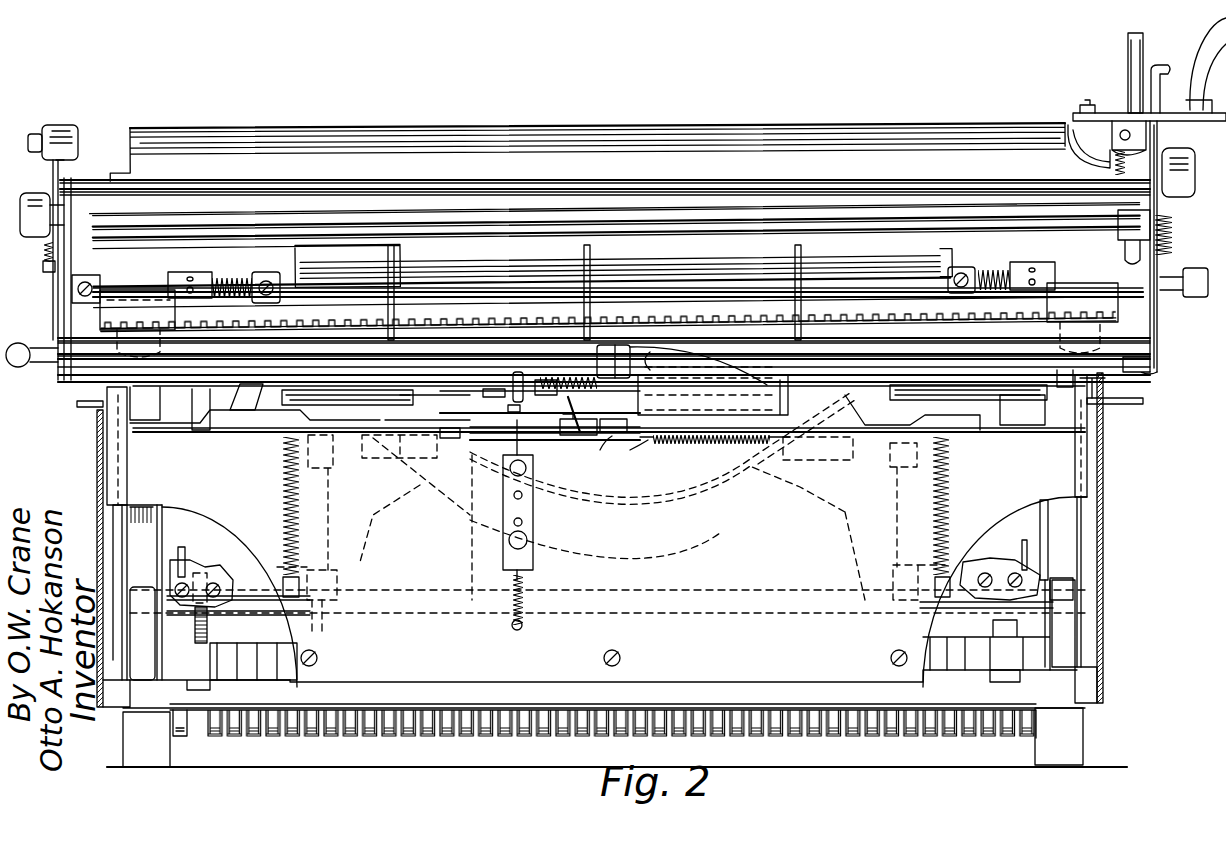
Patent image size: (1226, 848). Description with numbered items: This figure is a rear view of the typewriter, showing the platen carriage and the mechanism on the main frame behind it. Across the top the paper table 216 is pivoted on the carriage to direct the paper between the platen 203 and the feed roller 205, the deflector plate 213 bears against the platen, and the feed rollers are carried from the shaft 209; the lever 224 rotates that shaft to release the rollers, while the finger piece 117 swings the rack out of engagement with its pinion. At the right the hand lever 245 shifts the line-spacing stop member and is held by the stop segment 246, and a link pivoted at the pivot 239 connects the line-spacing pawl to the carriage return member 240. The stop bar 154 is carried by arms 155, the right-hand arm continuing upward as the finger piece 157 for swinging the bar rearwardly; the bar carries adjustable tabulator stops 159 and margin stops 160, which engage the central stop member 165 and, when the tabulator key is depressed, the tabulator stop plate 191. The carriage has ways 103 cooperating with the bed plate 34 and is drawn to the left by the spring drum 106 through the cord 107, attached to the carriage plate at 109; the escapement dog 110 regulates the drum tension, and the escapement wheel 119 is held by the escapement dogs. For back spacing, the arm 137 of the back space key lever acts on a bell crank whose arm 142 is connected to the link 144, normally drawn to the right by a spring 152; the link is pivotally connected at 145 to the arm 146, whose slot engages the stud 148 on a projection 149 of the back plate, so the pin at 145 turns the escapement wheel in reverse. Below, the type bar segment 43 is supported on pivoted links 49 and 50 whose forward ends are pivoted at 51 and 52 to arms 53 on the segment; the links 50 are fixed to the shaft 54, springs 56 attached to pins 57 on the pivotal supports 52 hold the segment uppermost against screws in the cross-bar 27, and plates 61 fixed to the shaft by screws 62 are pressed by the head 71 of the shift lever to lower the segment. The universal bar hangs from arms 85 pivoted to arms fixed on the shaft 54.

The paper table 216 is at (290, 118).
The finger piece 157 is at (30, 152).
The finger piece 117 is at (18, 232).
The cord attachment point 109 is at (22, 368).
The platen 203 is at (190, 245).
The deflector plate 213 is at (240, 248).
The margin stops 160 is at (145, 300).
The stop bar 154 is at (338, 318).
The shaft 209 is at (360, 295).
The tabulator stops 159 is at (405, 248).
The paper feed roller 205 is at (488, 268).
The central stop member 165 is at (630, 345).
The tabulator stop plate 191 is at (680, 348).
The escapement wheel 119 is at (640, 372).
The escapement dog 110 is at (905, 362).
The spring drum 106 is at (950, 362).
The hand lever 245 is at (1128, 55).
The stop segment 246 is at (1160, 68).
The carriage return member 240 is at (1205, 55).
The pivot 239 is at (1200, 125).
The lever 224 is at (1182, 200).
The arms 155 is at (1165, 298).
The bed plate 34 is at (1150, 350).
The ways 103 is at (1125, 385).
The cord 107 is at (915, 408).
The bell crank arm 142 is at (1008, 410).
The stud 148 is at (615, 427).
The projection 149 is at (620, 451).
The pivotal connection 145 is at (580, 432).
The arm 146 is at (642, 459).
The link 144 is at (690, 447).
The spring 152 is at (750, 462).
The type bar segment 43 is at (785, 495).
The arms 85 is at (760, 540).
The pivot 51 is at (340, 448).
The links 49 is at (305, 487).
The springs 56 is at (283, 500).
The pins 57 is at (285, 575).
The arms 53 is at (370, 540).
The pivotal supports 52 is at (340, 585).
The head 71 is at (186, 548).
The plate 61 is at (200, 572).
The screws 62 is at (992, 572).
The links 50 is at (335, 612).
The shaft 54 is at (320, 655).
The cross-bar 27 is at (150, 685).
The arm 137 is at (1050, 540).